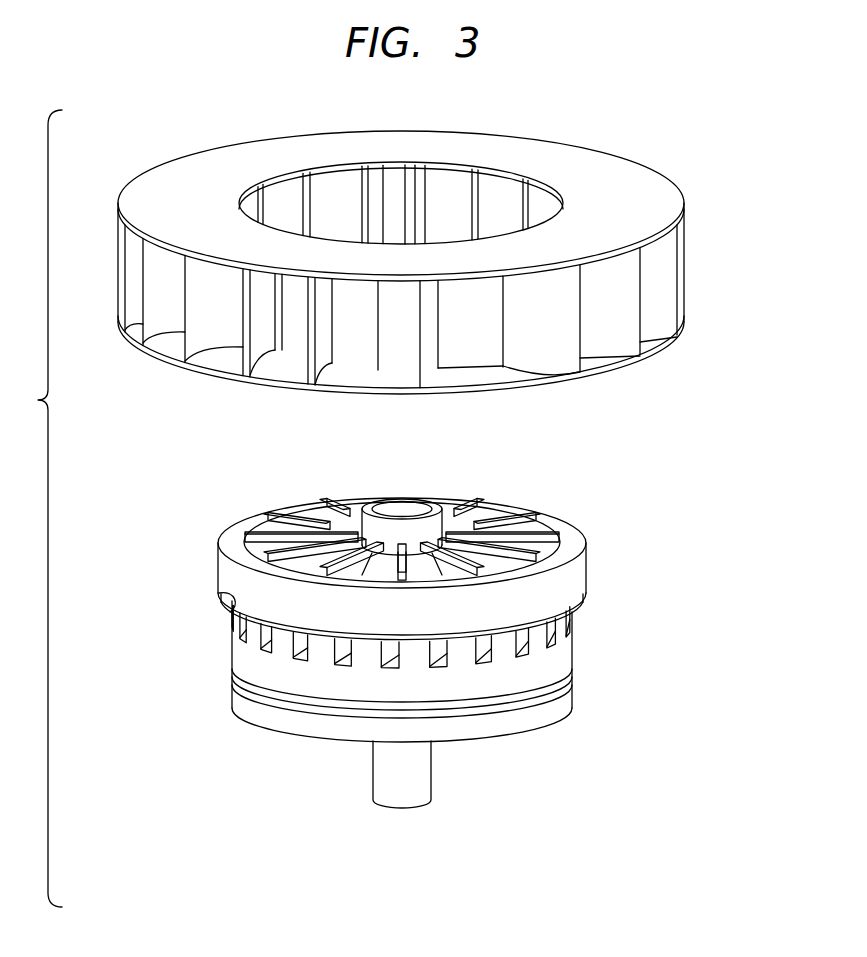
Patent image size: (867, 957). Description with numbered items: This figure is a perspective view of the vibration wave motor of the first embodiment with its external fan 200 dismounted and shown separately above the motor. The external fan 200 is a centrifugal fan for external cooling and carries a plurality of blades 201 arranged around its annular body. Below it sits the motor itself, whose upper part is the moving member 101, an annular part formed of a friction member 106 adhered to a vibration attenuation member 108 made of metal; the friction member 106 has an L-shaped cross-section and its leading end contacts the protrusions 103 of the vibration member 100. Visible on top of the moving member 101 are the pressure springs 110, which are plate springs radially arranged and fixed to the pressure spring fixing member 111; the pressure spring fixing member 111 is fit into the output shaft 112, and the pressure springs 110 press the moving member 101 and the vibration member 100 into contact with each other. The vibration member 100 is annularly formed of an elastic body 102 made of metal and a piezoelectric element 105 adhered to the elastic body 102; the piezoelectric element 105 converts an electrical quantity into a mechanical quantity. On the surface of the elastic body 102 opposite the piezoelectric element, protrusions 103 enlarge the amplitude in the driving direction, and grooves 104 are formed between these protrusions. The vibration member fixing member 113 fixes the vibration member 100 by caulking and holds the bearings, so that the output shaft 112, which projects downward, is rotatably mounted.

The external fan 200 is at (711, 190).
The blades 201 is at (657, 318).
The vibration member 100 is at (600, 605).
The moving member 101 is at (600, 537).
The elastic body 102 is at (318, 675).
The protrusions 103 is at (258, 641).
The grooves 104 is at (270, 653).
The piezoelectric element 105 is at (386, 700).
The friction member 106 is at (220, 592).
The vibration attenuation member 108 is at (235, 533).
The pressure springs 110 is at (530, 553).
The pressure spring fixing member 111 is at (412, 528).
The output shaft 112 is at (410, 797).
The vibration member fixing member 113 is at (550, 717).